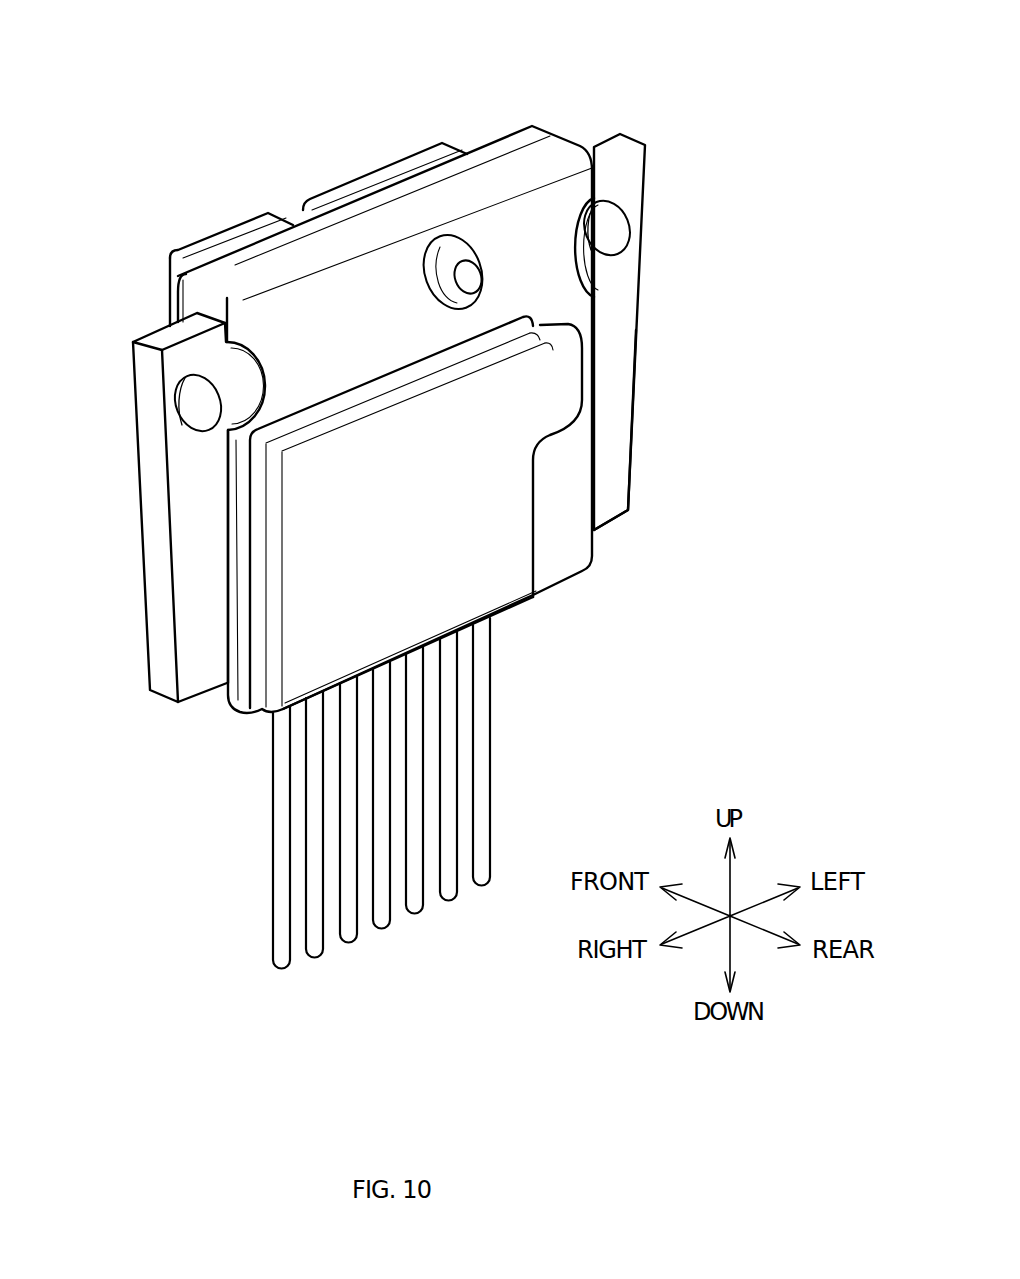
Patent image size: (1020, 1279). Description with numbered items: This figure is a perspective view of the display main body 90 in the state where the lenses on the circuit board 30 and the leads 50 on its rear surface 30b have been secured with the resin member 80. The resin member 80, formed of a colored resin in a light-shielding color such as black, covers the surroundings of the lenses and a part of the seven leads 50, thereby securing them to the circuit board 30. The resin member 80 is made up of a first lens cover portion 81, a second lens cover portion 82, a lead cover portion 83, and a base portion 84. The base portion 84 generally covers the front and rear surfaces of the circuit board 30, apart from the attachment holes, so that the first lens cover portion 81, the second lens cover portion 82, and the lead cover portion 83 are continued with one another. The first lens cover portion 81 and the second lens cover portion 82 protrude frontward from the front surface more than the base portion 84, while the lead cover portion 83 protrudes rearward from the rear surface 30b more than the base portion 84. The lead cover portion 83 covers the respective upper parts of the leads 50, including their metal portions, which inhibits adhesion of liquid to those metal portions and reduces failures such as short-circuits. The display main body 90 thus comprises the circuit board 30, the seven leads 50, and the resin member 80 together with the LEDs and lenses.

The resin member 80 is at (583, 152).
The first lens cover portion 81 is at (388, 165).
The second lens cover portion 82 is at (233, 237).
The lead cover portion 83 is at (502, 515).
The base portion 84 is at (300, 308).
The circuit board 30 is at (667, 301).
The rear surface 30b is at (618, 338).
The display main body 90 is at (147, 698).
The leads 50 is at (280, 952).